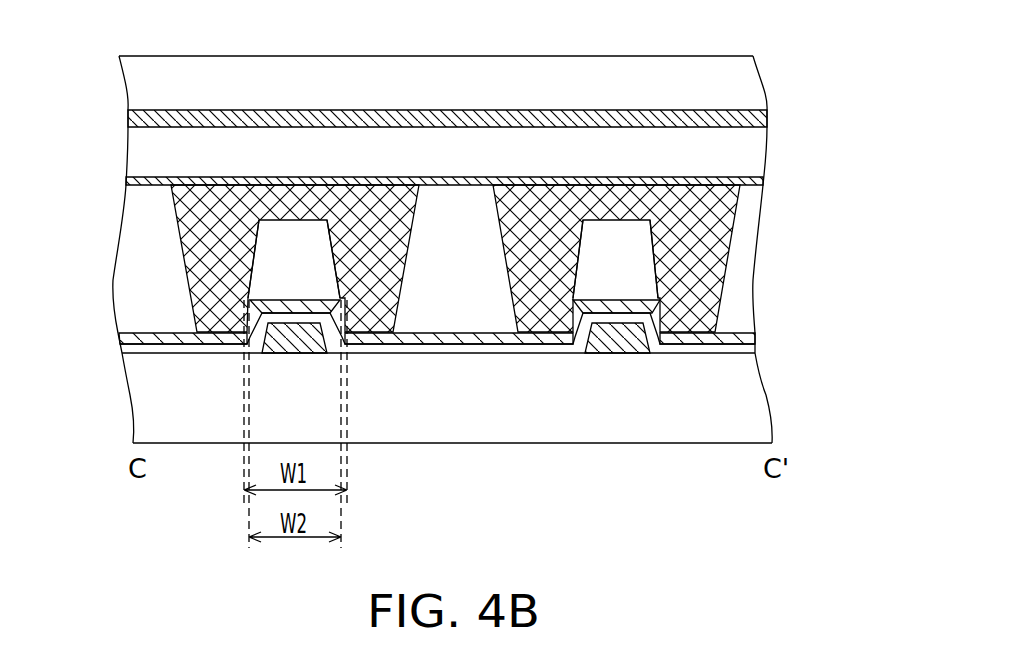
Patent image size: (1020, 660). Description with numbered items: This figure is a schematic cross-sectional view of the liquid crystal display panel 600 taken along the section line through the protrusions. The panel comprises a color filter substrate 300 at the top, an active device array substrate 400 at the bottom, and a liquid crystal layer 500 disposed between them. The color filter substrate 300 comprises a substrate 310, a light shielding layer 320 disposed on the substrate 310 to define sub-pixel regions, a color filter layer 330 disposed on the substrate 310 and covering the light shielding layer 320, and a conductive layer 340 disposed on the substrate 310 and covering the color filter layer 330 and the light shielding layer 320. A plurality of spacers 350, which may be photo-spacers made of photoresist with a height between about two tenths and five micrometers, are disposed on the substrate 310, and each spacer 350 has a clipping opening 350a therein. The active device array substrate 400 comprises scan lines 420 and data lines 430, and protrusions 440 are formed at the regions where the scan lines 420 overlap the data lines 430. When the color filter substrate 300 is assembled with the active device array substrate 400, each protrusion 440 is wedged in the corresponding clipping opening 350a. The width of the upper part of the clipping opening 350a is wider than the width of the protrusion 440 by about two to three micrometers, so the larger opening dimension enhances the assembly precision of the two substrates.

The color filter substrate 300 is at (840, 60).
The substrate 310 is at (748, 82).
The light shielding layer 320 is at (767, 114).
The color filter layer 330 is at (748, 155).
The conductive layer 340 is at (765, 180).
The spacer 350 is at (180, 230).
The clipping opening 350a is at (258, 281).
The active device array substrate 400 is at (753, 425).
The scan line 420 is at (630, 357).
The data line 430 is at (740, 337).
The protrusion 440 is at (357, 366).
The liquid crystal layer 500 is at (143, 313).
The liquid crystal display panel 600 is at (777, 545).